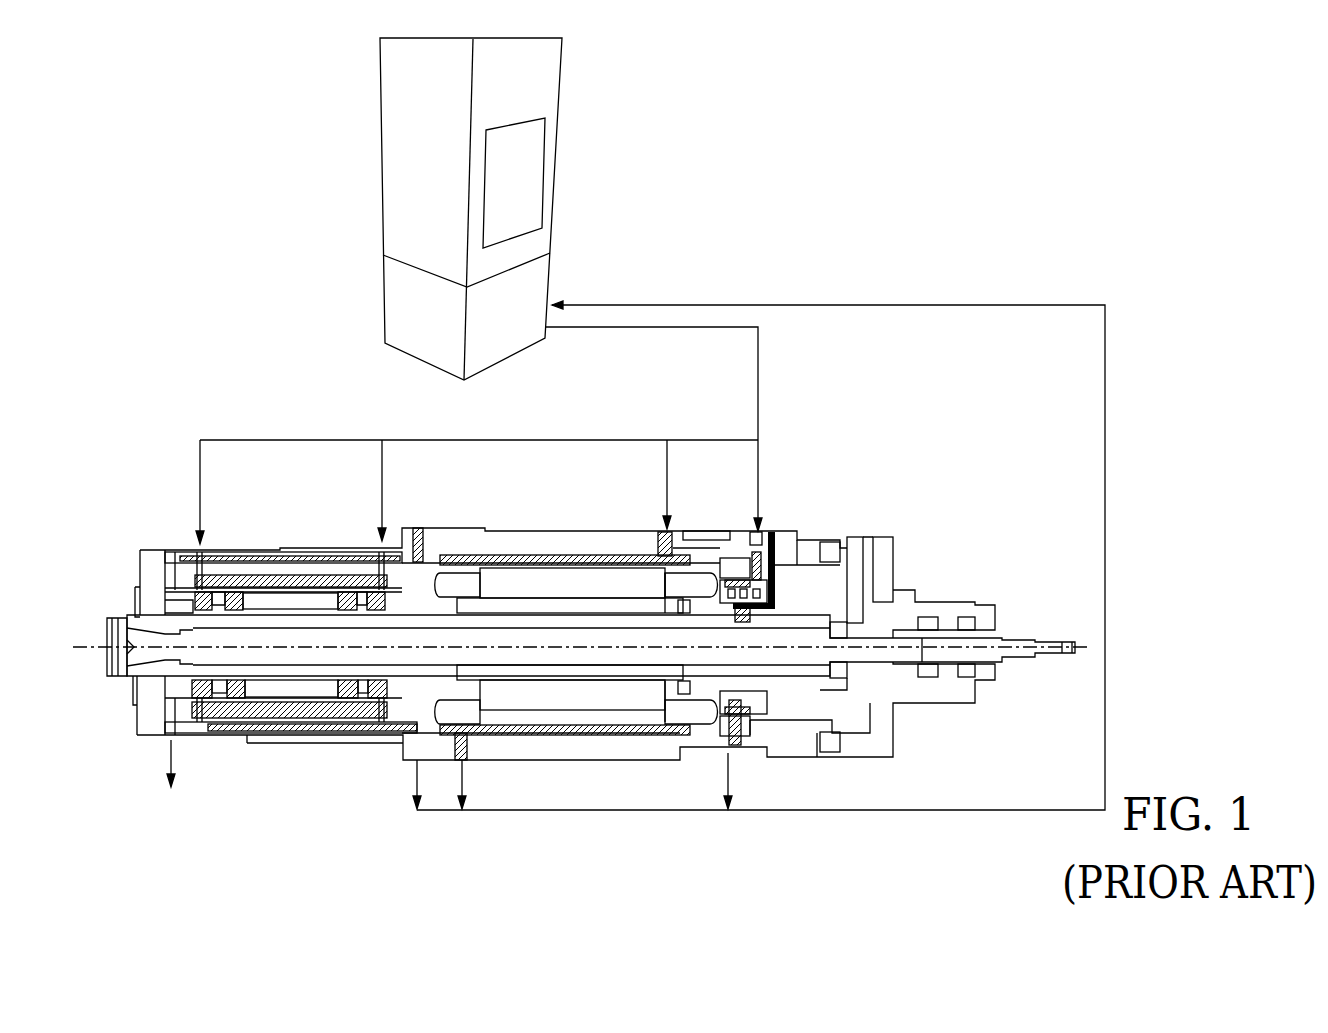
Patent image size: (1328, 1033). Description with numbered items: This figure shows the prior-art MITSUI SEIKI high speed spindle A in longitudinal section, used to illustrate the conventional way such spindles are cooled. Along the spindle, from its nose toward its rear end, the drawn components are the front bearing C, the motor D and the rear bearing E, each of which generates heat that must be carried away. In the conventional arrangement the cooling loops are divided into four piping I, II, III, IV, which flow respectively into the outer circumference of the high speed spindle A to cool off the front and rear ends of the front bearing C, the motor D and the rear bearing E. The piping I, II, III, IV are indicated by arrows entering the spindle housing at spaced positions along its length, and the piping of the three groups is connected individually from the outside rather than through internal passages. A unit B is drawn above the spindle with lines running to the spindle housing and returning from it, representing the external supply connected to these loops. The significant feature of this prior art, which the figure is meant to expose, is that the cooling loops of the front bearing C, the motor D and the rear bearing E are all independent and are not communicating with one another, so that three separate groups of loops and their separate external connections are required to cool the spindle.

The high speed spindle A is at (841, 505).
The controller B is at (552, 98).
The front bearing C is at (340, 690).
The motor D is at (545, 705).
The rear bearing E is at (777, 613).
The piping I is at (220, 497).
The piping II is at (406, 495).
The piping III is at (690, 492).
The piping IV is at (785, 493).